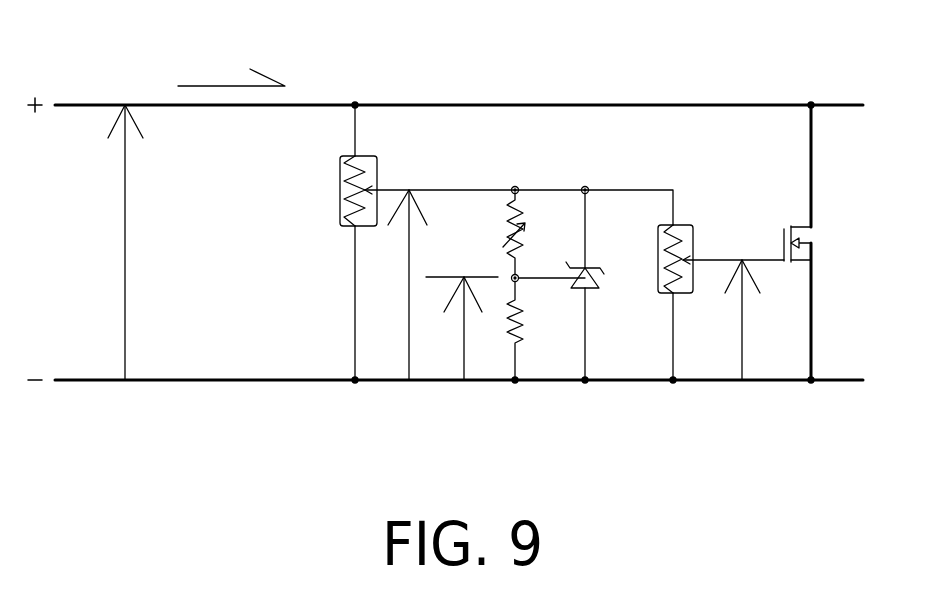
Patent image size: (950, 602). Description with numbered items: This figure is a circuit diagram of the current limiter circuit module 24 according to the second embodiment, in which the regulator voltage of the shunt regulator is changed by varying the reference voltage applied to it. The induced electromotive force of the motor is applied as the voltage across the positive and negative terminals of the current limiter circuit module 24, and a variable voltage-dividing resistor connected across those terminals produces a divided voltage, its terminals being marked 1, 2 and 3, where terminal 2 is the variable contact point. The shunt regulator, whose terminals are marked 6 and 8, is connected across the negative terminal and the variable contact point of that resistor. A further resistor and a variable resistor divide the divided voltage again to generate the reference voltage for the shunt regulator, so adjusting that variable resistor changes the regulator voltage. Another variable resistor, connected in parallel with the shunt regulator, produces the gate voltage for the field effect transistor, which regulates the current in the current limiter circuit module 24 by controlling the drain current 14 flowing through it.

The current limiter circuit module 24 is at (445, 203).
The drain current I4 14 is at (828, 295).
The terminal 1 of variable resistor 1 is at (504, 186).
The wiper terminal 2 of variable resistor 2 is at (574, 220).
The terminal 3 of variable resistor 3 is at (504, 303).
The anode terminal 6 of zener diode RG4 6 is at (576, 334).
The cathode terminal 8 of zener diode RG4 8 is at (552, 271).